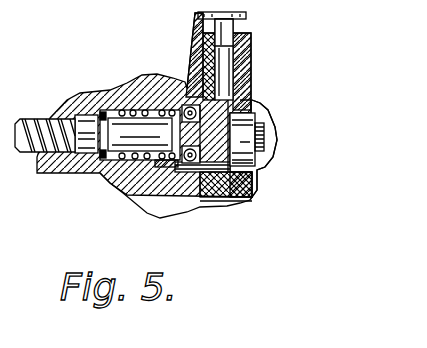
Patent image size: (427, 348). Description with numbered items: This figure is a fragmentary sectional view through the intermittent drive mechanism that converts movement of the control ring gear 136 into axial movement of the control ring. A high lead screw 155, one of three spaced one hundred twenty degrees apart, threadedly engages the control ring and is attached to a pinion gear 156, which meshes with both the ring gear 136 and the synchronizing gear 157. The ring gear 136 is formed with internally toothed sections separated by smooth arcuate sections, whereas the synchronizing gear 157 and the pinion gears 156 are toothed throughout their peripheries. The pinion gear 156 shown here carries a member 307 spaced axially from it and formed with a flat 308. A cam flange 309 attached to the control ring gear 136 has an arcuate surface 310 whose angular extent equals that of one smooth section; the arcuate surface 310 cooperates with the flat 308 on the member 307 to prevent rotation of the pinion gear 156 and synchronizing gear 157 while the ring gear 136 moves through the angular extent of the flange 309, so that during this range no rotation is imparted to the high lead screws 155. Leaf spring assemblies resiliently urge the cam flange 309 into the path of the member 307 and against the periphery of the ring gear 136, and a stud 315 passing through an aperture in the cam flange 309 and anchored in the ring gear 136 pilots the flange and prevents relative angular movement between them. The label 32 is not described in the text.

The angle label 32 is at (299, 6).
The control ring gear 136 is at (200, 70).
The high lead screw 155 is at (53, 150).
The pinion gear 156 is at (194, 153).
The synchronizing gear 157 is at (245, 193).
The member 307 is at (248, 153).
The flat 308 is at (260, 108).
The cam flange 309 is at (252, 60).
The arcuate surface 310 is at (253, 97).
The stud 315 is at (197, 21).